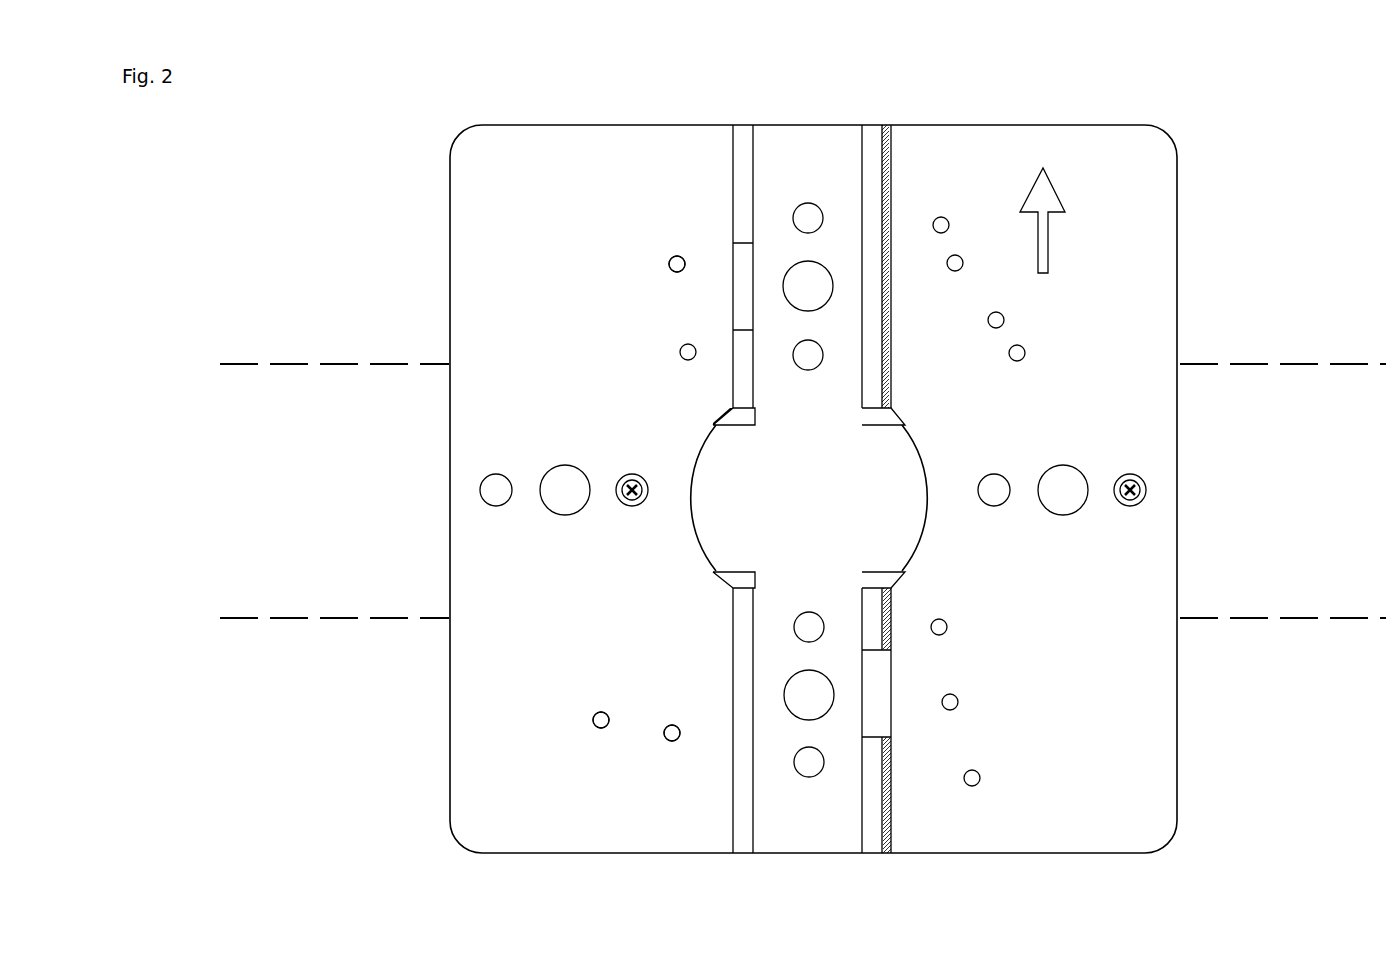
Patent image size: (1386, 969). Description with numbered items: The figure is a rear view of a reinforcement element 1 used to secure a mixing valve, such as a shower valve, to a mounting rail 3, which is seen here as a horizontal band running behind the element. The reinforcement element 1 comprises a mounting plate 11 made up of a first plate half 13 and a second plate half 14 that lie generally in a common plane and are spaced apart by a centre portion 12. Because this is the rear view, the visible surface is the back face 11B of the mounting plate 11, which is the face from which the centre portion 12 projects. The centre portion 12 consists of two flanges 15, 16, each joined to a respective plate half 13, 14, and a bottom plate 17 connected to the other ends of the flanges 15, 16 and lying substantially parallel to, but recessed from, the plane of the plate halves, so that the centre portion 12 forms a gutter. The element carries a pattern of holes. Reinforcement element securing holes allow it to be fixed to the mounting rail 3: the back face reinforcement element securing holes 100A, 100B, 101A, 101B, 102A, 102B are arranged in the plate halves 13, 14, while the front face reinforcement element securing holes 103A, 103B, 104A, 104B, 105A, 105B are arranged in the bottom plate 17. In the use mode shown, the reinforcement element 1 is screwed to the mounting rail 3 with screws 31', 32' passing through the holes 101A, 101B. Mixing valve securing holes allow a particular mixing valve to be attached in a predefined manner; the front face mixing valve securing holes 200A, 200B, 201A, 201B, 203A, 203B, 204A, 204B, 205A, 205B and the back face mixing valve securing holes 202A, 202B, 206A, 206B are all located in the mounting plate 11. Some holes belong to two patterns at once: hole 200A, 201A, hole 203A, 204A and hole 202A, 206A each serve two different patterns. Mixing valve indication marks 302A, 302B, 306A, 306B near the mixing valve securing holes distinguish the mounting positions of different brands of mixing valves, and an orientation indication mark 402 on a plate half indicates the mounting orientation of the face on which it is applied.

The reinforcement element 1 is at (392, 654).
The mounting rail 3 is at (290, 466).
The mounting plate 11 is at (922, 835).
The back face 11B is at (1142, 623).
The centre portion 12 is at (811, 120).
The first plate half 13 is at (568, 623).
The second plate half 14 is at (936, 758).
The flange 15 is at (752, 418).
The flange 16 is at (878, 418).
The bottom plate 17 is at (832, 510).
The screw 31' is at (643, 530).
The screw 32' is at (1124, 532).
The back face reinforcement element securing hole 100A is at (494, 490).
The back face reinforcement element securing hole 100B is at (994, 490).
The back face reinforcement element securing hole 101A is at (634, 484).
The back face reinforcement element securing hole 101B is at (1128, 484).
The back face reinforcement element securing hole 102A is at (561, 490).
The back face reinforcement element securing hole 102B is at (1060, 490).
The front face reinforcement element securing hole 103A is at (808, 626).
The front face reinforcement element securing hole 103B is at (806, 220).
The front face reinforcement element securing hole 104A is at (808, 768).
The front face reinforcement element securing hole 104B is at (808, 358).
The front face reinforcement element securing hole 105A is at (806, 696).
The front face reinforcement element securing hole 105B is at (800, 286).
The front face mixing valve securing hole 200A is at (595, 722).
The front face mixing valve securing hole 200B is at (1025, 352).
The front face mixing valve securing hole 201A is at (601, 720).
The front face mixing valve securing hole 201B is at (1004, 320).
The back face mixing valve securing hole 202A is at (672, 266).
The back face mixing valve securing hole 202B is at (948, 700).
The front face mixing valve securing hole 203A is at (667, 736).
The front face mixing valve securing hole 203B is at (962, 263).
The front face mixing valve securing hole 204A is at (672, 733).
The front face mixing valve securing hole 204B is at (941, 217).
The front face mixing valve securing hole 205A is at (680, 353).
The front face mixing valve securing hole 205B is at (936, 620).
The back face mixing valve securing hole 206A is at (677, 264).
The back face mixing valve securing hole 206B is at (968, 774).
The mixing valve indication mark 302A is at (528, 205).
The mixing valve indication mark 302B is at (1135, 730).
The mixing valve indication mark 306A is at (660, 204).
The mixing valve indication mark 306B is at (1135, 804).
The orientation indication mark 402 is at (1042, 196).